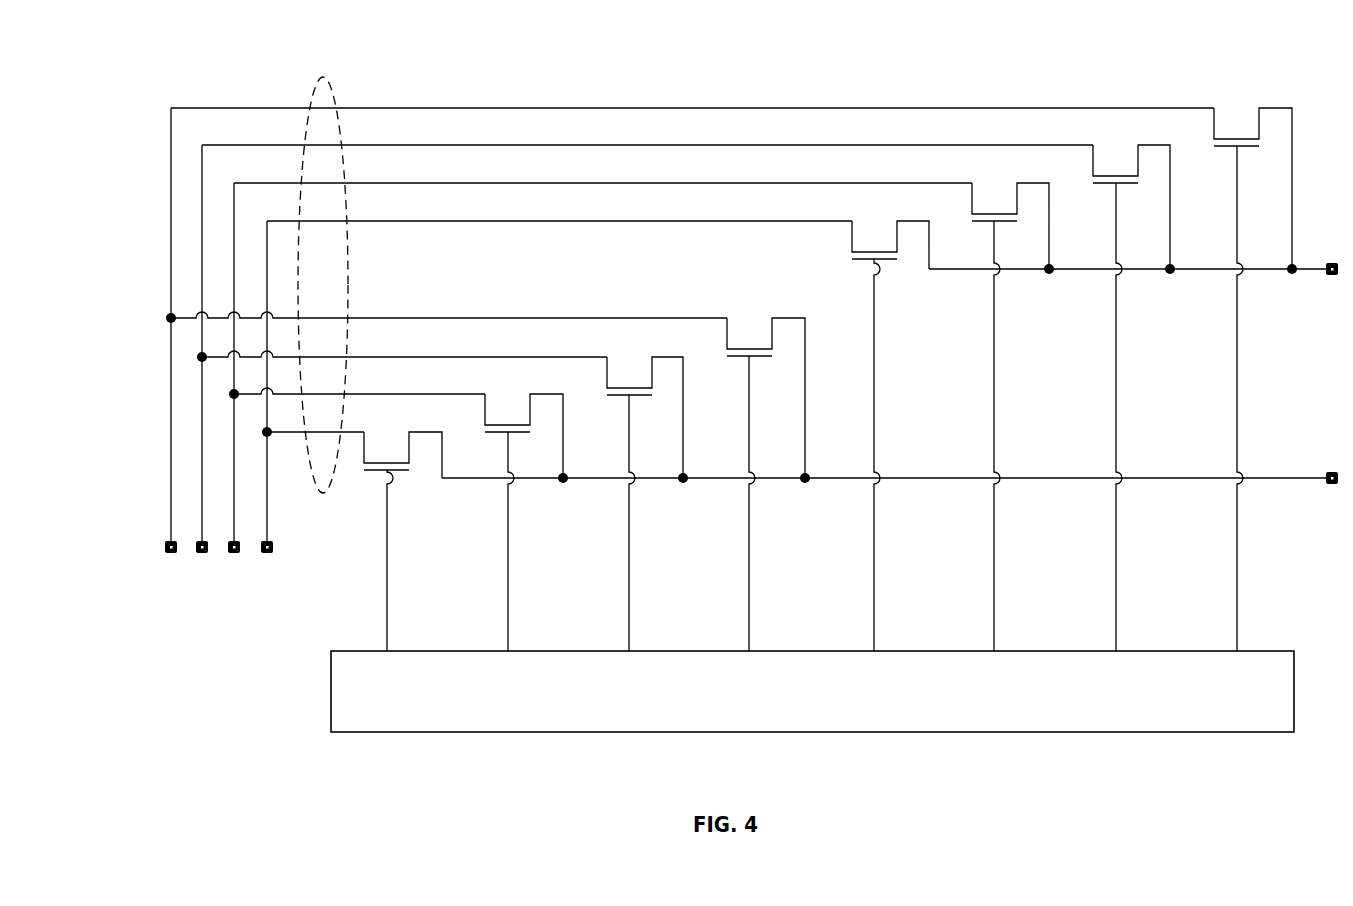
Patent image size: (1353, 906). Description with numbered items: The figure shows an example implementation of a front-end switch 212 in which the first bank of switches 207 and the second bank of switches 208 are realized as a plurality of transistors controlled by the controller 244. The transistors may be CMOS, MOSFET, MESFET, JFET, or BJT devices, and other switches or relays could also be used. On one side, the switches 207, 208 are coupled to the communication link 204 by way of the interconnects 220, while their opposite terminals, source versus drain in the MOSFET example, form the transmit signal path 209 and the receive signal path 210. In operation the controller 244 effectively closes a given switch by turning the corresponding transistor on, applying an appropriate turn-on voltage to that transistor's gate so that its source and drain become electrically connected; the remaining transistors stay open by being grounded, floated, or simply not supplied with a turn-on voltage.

The communication link 204 is at (288, 570).
The first bank of switches 207 is at (1295, 94).
The second bank of switches 208 is at (813, 297).
The transmit signal path 209 is at (1134, 285).
The receive signal path 210 is at (892, 495).
The multiplexer circuit 212 is at (691, 70).
The interconnects 220 is at (326, 82).
The controller 244 is at (907, 700).